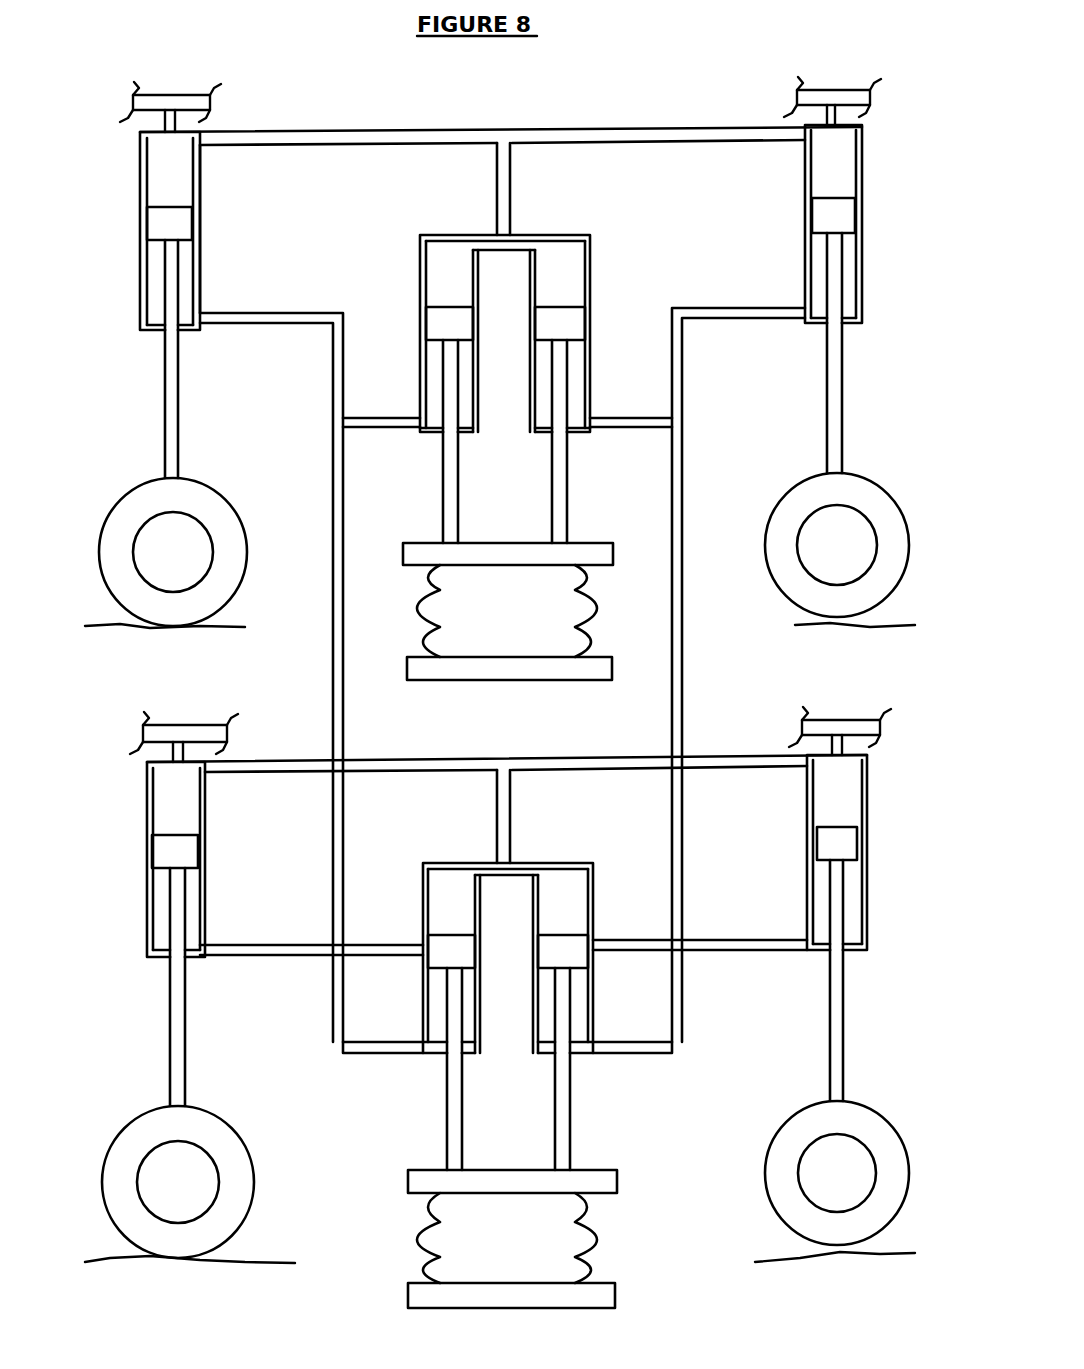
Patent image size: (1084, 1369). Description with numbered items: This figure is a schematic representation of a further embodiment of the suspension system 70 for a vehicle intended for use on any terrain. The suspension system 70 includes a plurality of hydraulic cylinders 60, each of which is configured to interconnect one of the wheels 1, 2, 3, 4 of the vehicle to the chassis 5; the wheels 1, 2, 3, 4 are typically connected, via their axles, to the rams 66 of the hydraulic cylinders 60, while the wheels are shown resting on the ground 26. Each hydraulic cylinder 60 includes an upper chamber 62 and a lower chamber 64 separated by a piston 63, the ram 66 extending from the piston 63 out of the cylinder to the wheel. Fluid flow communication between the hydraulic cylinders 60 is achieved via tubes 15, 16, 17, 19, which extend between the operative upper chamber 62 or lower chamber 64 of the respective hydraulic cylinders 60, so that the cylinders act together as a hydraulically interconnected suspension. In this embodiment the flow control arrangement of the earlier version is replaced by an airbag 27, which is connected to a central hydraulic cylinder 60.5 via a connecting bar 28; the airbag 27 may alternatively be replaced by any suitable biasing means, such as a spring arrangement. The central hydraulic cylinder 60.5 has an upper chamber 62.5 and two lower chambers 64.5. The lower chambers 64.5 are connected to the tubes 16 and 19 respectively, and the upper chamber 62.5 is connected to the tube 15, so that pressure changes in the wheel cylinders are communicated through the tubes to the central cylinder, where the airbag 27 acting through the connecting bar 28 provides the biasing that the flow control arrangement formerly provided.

The suspension system 70 is at (580, 94).
The tube 15 is at (465, 137).
The tube 17 is at (488, 768).
The tube 19 is at (337, 615).
The tube 16 is at (678, 628).
The chassis 5 is at (183, 103).
The hydraulic cylinder 60 is at (132, 213).
The upper chamber 62 is at (438, 257).
The piston 63 is at (443, 320).
The lower chamber 64 is at (420, 353).
The ram 66 is at (445, 375).
The upper chamber 62.5 is at (547, 245).
The hydraulic cylinder 60.5 is at (485, 282).
The lower chambers 64.5 is at (527, 432).
The connecting bar 28 is at (540, 550).
The airbag 27 is at (507, 620).
The wheel 1 is at (785, 518).
The wheel 2 is at (202, 503).
The wheel 3 is at (788, 1155).
The wheel 4 is at (237, 1160).
The ground surface 26 is at (233, 627).